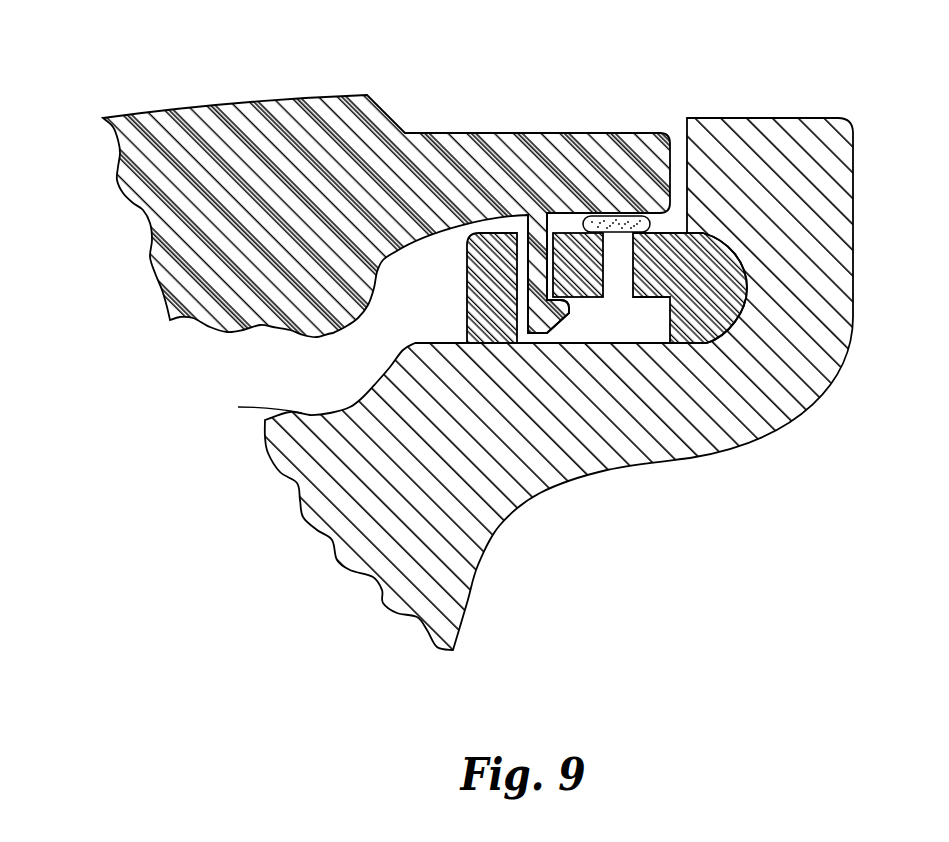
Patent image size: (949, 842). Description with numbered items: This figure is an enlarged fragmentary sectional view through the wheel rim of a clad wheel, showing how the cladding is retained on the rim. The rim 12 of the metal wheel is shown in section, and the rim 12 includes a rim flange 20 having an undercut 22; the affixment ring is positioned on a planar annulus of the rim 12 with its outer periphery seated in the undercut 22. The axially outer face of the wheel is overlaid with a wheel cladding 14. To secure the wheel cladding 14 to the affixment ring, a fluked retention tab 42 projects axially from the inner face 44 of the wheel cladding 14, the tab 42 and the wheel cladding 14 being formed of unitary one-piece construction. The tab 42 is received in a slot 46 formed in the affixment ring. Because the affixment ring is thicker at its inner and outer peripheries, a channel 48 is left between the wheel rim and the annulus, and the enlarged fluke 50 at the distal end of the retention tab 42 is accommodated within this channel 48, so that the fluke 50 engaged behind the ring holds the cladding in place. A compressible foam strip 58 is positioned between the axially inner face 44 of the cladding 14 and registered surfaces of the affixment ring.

The rim 12 is at (570, 479).
The wheel cladding 14 is at (412, 130).
The rim flange 20 is at (853, 208).
The undercut 22 is at (748, 277).
The fluked retention tab 42 is at (528, 300).
The inner face 44 is at (522, 315).
The slot 46 is at (252, 407).
The channel 48 is at (633, 327).
The fluke 50 is at (553, 315).
The compressible foam strip 58 is at (633, 217).